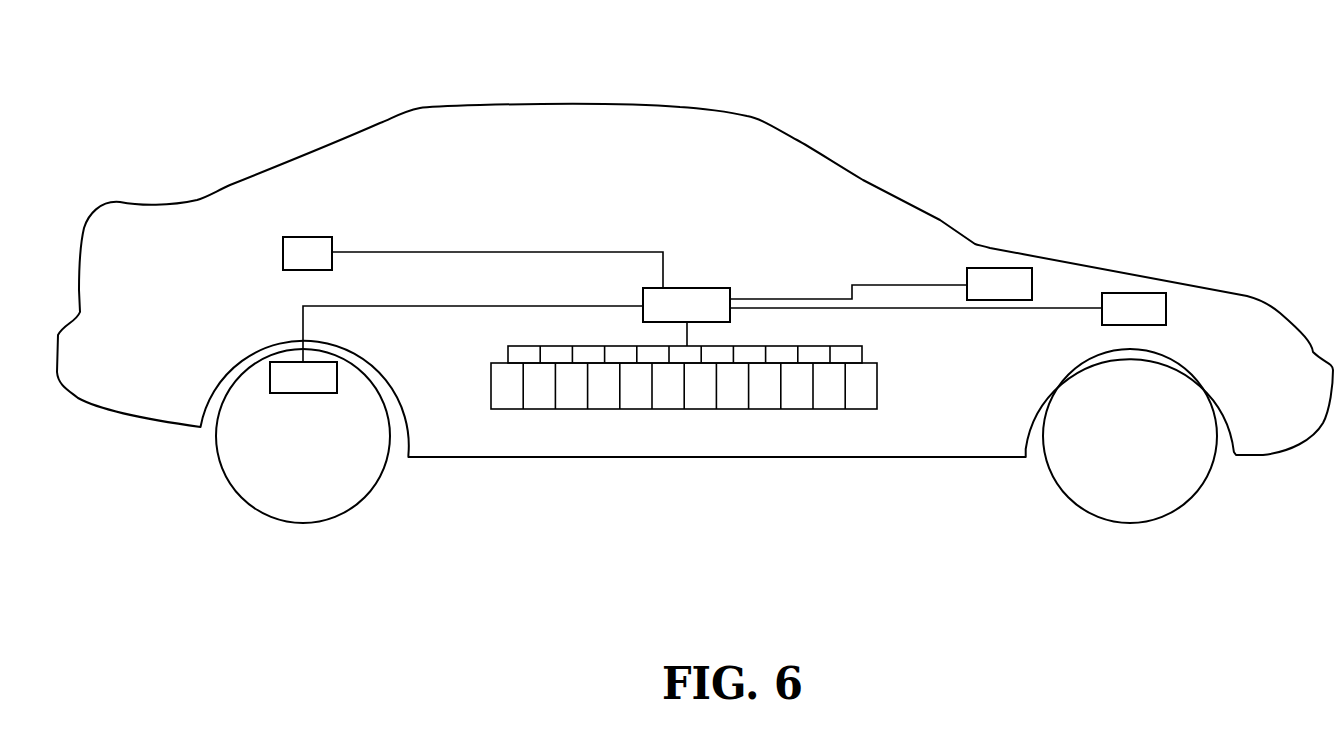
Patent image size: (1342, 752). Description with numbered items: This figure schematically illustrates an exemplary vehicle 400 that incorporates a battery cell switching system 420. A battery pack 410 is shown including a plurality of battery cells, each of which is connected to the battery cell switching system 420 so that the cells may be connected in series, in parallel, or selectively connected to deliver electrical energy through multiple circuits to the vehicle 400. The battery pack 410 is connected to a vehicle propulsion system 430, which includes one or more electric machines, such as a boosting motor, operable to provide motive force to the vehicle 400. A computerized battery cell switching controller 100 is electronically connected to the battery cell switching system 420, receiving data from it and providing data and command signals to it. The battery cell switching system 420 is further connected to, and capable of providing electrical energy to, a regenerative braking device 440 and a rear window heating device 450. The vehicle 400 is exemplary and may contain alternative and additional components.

The vehicle 400 is at (517, 106).
The battery pack 410 is at (887, 478).
The battery cell switching system 420 is at (702, 288).
The vehicle propulsion system 430 is at (1128, 293).
The regenerative braking device 440 is at (288, 395).
The rear window heating device 450 is at (305, 237).
The computerized battery cell switching controller 100 is at (998, 268).